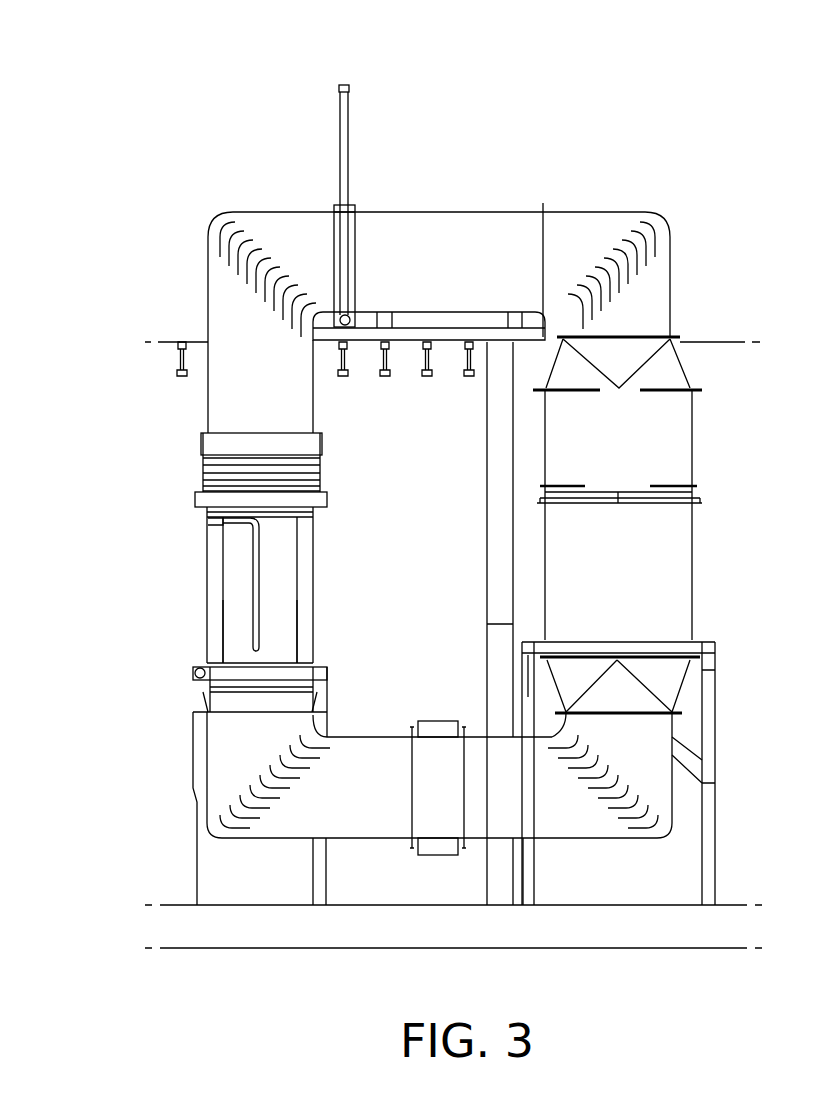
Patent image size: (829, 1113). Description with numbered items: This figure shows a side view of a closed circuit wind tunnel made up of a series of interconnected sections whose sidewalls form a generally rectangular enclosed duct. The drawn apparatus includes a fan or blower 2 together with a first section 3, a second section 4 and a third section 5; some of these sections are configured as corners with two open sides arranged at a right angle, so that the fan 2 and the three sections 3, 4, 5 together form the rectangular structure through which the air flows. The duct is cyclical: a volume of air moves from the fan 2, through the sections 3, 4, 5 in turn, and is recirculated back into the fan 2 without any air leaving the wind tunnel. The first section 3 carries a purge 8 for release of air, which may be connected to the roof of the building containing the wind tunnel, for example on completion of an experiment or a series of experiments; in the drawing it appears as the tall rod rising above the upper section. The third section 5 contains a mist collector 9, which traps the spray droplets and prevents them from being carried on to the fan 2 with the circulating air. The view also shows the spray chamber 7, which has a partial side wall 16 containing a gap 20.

The fan 2 is at (692, 533).
The first section 3 is at (496, 76).
The second section 4 is at (92, 592).
The third section 5 is at (321, 958).
The spray chamber 7 is at (207, 585).
The purge 8 is at (340, 87).
The mist collector 9 is at (438, 857).
The partial side wall 16 is at (238, 630).
The gap 20 is at (252, 545).